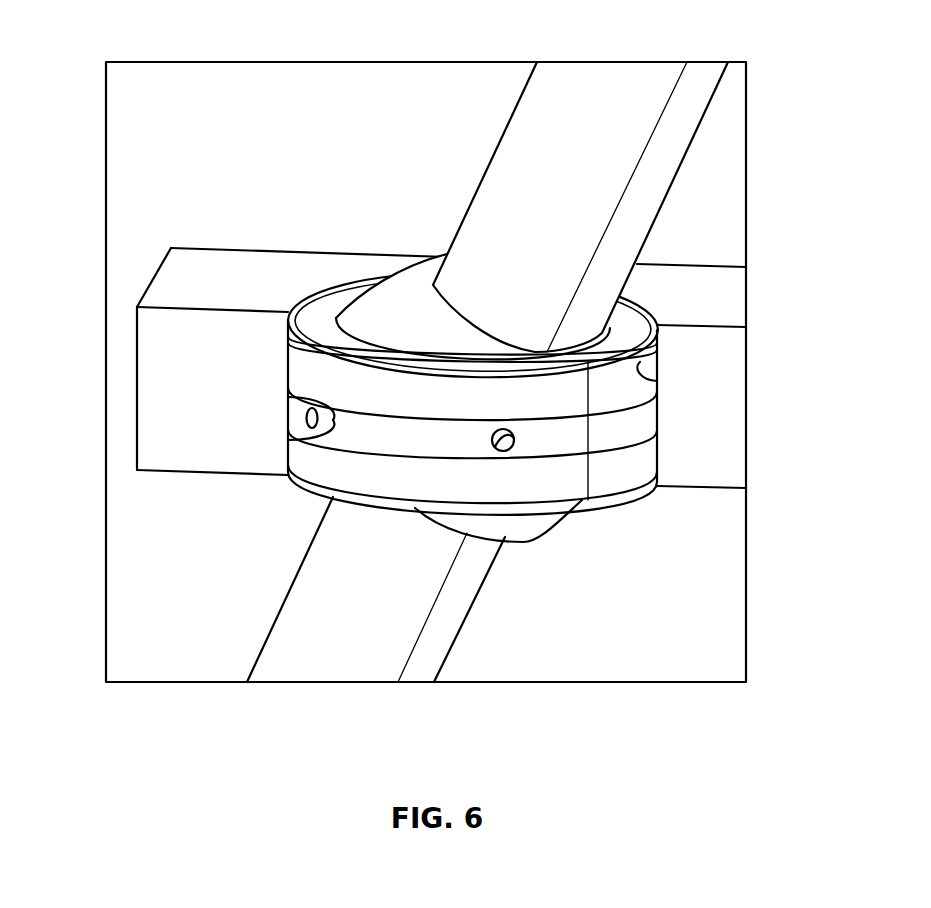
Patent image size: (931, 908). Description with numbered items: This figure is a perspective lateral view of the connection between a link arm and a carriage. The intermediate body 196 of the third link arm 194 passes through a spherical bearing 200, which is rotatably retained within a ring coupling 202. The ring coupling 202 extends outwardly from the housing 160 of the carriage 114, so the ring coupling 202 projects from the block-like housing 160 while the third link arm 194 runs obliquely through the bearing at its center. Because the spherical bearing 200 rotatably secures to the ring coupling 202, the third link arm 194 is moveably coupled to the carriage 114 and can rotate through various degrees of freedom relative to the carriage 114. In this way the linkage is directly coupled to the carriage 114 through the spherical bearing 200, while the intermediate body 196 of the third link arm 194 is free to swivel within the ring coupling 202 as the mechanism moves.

The carriage 114 is at (722, 123).
The housing 160 is at (183, 550).
The third link arm 194 is at (445, 595).
The intermediate body 196 is at (613, 253).
The spherical bearing 200 is at (403, 288).
The ring coupling 202 is at (657, 381).